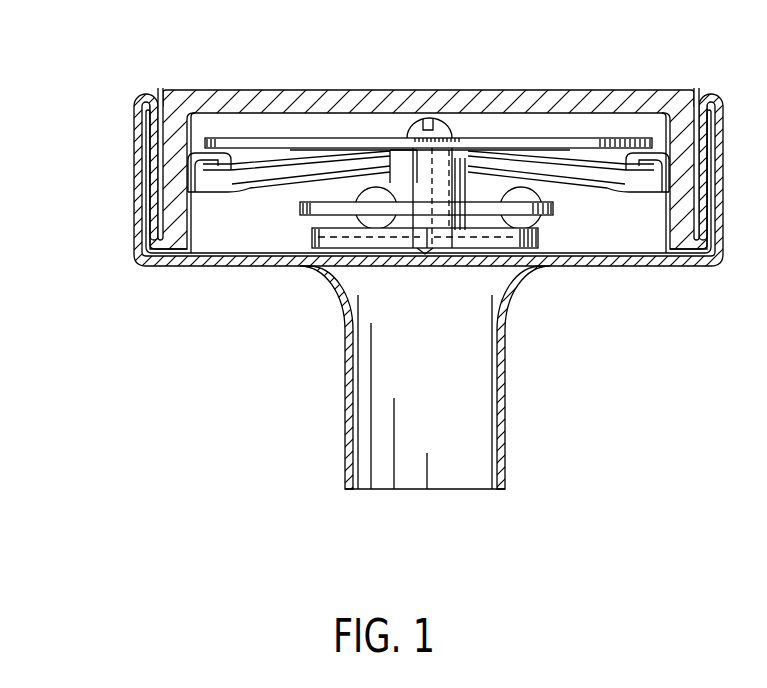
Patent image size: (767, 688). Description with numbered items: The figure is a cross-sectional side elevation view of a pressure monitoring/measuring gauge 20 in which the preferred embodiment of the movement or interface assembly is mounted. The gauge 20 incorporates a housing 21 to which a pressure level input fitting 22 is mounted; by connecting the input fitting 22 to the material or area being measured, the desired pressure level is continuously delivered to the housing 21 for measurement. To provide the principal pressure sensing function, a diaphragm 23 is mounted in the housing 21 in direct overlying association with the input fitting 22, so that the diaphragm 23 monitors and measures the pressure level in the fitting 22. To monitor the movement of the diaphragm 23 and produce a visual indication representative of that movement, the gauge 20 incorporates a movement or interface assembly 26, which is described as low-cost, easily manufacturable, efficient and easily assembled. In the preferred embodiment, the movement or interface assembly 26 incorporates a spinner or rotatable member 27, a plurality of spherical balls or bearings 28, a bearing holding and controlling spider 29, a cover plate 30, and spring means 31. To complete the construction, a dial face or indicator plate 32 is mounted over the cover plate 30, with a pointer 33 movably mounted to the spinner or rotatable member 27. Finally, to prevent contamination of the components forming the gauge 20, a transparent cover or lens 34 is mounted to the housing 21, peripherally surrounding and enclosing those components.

The gauge 20 is at (327, 492).
The housing 21 is at (133, 204).
The pressure level input fitting 22 is at (506, 450).
The diaphragm 23 is at (470, 262).
The movement or interface assembly 26 is at (296, 218).
The spinner or rotatable member 27 is at (370, 243).
The spherical balls or bearings 28 is at (531, 222).
The bearing holding and controlling spider 29 is at (554, 211).
The cover plate 30 is at (660, 162).
The spring means 31 is at (280, 162).
The dial face or indicator plate 32 is at (521, 150).
The pointer 33 is at (333, 137).
The transparent cover or lens 34 is at (546, 97).